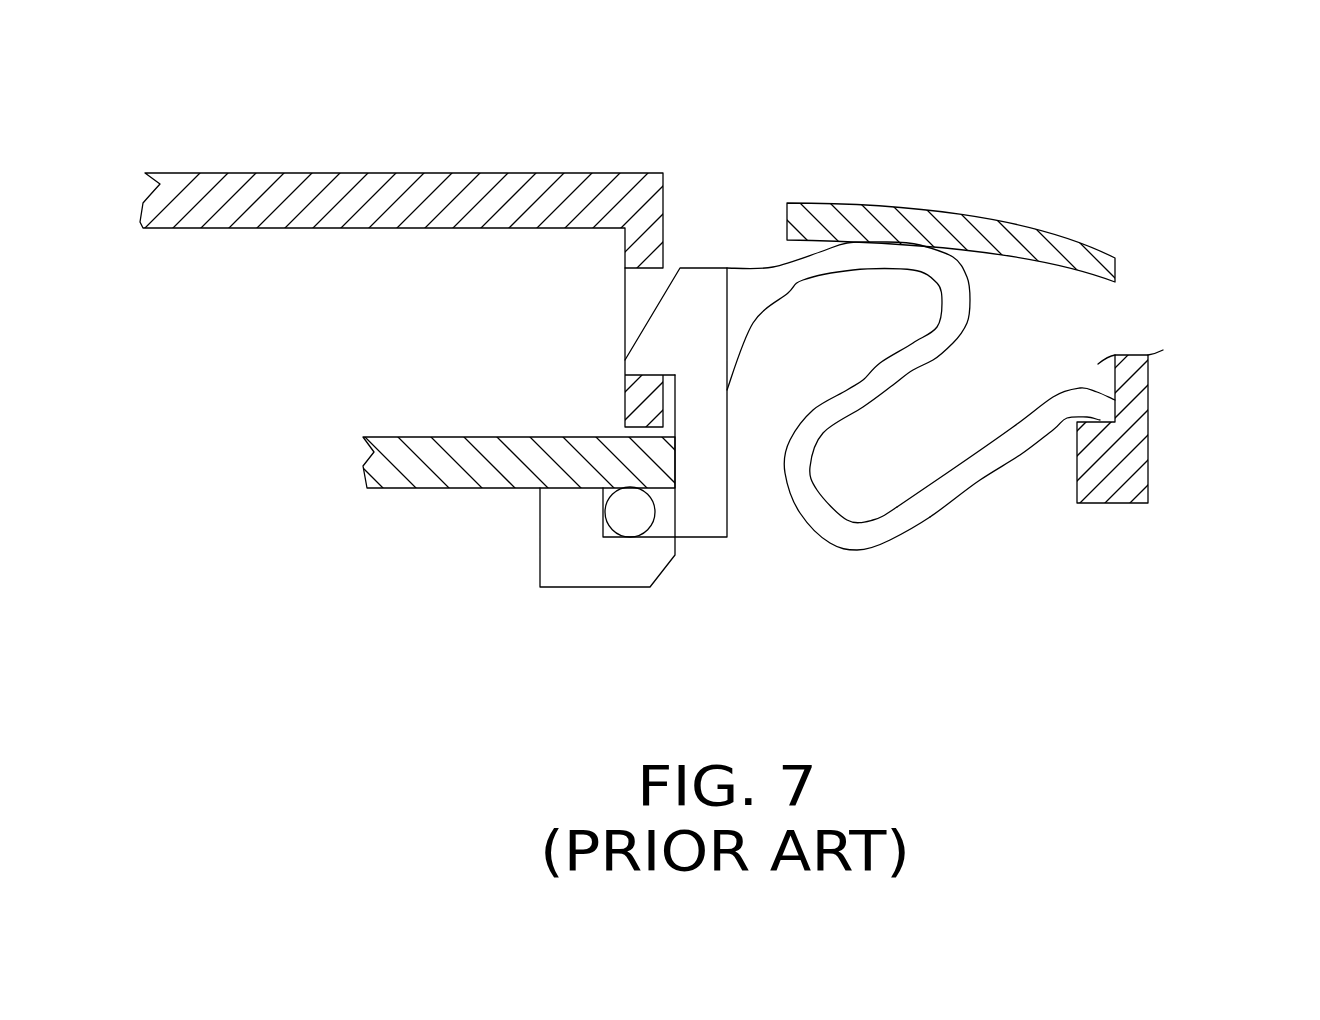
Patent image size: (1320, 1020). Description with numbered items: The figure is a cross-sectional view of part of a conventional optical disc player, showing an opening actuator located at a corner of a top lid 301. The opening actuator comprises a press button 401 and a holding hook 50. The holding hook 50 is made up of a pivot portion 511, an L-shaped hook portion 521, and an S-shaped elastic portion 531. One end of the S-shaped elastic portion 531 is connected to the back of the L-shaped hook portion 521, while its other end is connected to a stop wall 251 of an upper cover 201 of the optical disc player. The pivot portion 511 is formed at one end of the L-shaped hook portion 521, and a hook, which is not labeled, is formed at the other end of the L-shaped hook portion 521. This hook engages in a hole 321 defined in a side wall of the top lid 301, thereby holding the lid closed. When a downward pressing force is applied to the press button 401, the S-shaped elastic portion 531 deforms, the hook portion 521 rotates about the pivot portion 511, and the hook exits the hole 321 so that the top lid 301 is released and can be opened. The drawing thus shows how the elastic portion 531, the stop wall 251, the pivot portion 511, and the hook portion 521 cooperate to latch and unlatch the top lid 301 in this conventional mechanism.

The top lid 301 is at (275, 195).
The hole 321 is at (635, 300).
The L-shaped hook portion 521 is at (697, 295).
The upper cover 201 is at (410, 463).
The pivot portion 511 is at (637, 510).
The press button 401 is at (918, 228).
The stop wall 251 is at (1130, 390).
The holding hook 50 is at (902, 547).
The S-shaped elastic portion 531 is at (988, 458).